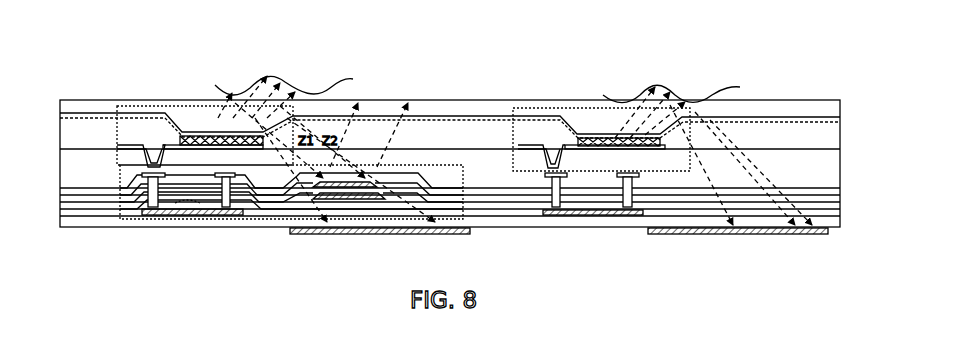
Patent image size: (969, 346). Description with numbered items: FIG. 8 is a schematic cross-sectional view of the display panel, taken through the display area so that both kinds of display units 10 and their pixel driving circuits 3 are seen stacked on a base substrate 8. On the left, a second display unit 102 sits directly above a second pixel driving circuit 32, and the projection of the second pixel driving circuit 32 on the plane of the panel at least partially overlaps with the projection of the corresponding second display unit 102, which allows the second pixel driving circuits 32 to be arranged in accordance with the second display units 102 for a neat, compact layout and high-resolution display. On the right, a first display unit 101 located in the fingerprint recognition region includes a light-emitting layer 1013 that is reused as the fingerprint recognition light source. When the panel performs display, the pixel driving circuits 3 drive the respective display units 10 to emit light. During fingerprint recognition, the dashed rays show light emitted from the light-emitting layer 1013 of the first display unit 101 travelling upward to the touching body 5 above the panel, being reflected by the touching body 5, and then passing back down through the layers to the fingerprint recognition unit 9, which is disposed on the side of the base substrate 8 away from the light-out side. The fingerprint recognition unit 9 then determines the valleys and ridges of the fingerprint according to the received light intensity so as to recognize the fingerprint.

The base substrate 8 is at (528, 224).
The fingerprint recognition unit 9 is at (452, 235).
The display units 10 is at (380, 117).
The first display unit 101 is at (513, 108).
The second display unit 102 is at (117, 106).
The light-emitting layer 1013 is at (600, 140).
The touching body 5 is at (671, 86).
The pixel driving circuits 3 is at (259, 209).
The second pixel driving circuit 32 is at (120, 218).